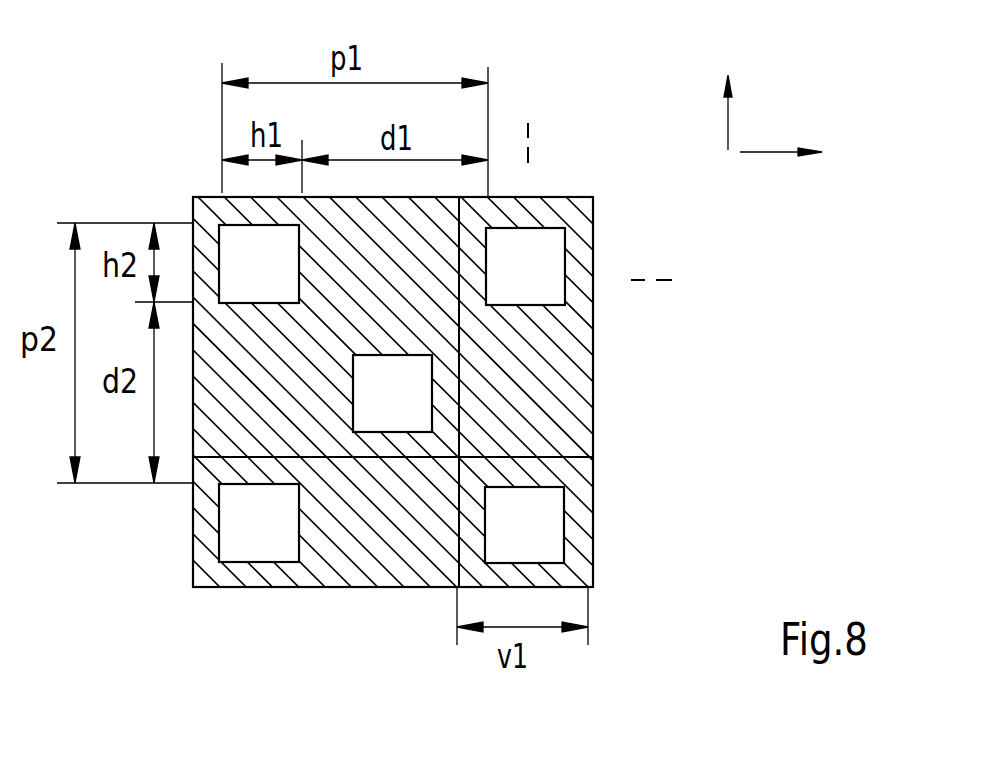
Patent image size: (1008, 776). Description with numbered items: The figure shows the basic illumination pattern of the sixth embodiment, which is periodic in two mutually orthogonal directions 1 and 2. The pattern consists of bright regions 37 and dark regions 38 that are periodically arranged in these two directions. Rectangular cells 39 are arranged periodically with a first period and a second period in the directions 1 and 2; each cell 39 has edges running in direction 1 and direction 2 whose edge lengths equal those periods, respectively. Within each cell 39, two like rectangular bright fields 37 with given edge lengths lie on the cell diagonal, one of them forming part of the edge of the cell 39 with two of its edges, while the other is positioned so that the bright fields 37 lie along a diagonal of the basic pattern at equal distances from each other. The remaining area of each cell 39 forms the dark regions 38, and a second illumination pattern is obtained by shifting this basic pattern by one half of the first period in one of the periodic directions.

The bright fields 37 is at (237, 237).
The dark regions 38 is at (218, 443).
The rectangular cells 39 is at (212, 190).
The direction 1 is at (790, 164).
The direction 2 is at (744, 108).